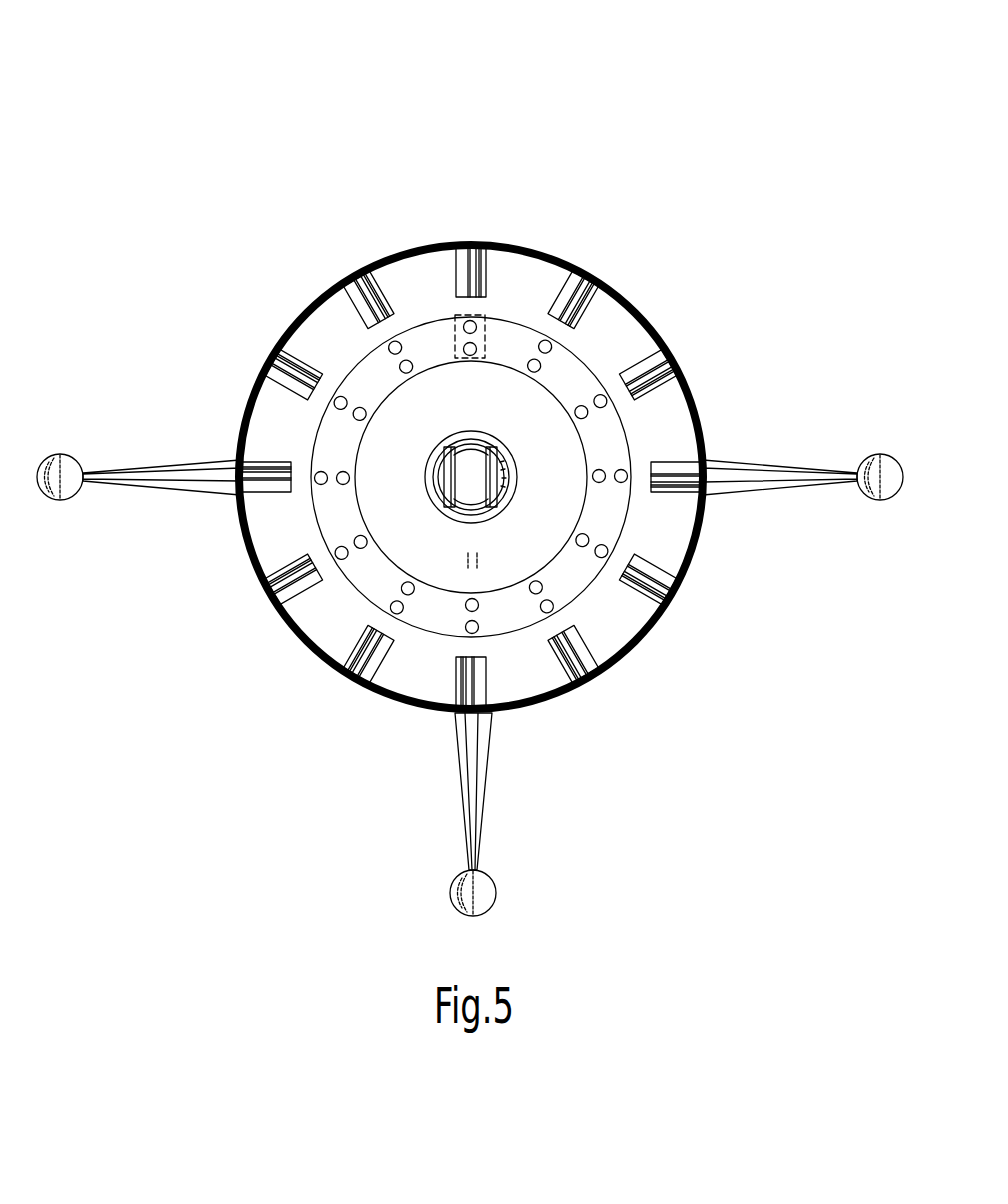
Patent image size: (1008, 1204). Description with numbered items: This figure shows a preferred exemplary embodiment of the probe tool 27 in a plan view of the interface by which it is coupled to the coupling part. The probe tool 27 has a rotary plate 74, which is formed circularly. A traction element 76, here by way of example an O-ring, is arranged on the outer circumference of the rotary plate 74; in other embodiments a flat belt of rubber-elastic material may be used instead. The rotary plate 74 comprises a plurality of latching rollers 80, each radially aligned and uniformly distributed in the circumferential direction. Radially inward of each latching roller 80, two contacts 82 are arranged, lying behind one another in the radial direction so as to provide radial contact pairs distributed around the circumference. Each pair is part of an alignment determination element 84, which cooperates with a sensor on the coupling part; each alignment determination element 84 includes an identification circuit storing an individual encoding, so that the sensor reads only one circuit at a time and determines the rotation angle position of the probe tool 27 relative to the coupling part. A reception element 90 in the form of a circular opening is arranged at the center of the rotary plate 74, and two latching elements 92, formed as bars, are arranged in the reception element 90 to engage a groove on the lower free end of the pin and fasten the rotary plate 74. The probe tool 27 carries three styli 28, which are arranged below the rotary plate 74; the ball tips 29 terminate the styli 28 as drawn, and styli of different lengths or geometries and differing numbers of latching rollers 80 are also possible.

The probe tool 27 is at (288, 779).
The styli 28 is at (187, 492).
The ball handle 29 is at (47, 500).
The rotary plate 74 is at (535, 275).
The traction element 76 is at (419, 247).
The latching rollers 80 is at (459, 290).
The contacts 82 is at (366, 412).
The alignment determination element 84 is at (485, 340).
The reception element 90 is at (481, 517).
The latching elements 92 is at (488, 447).